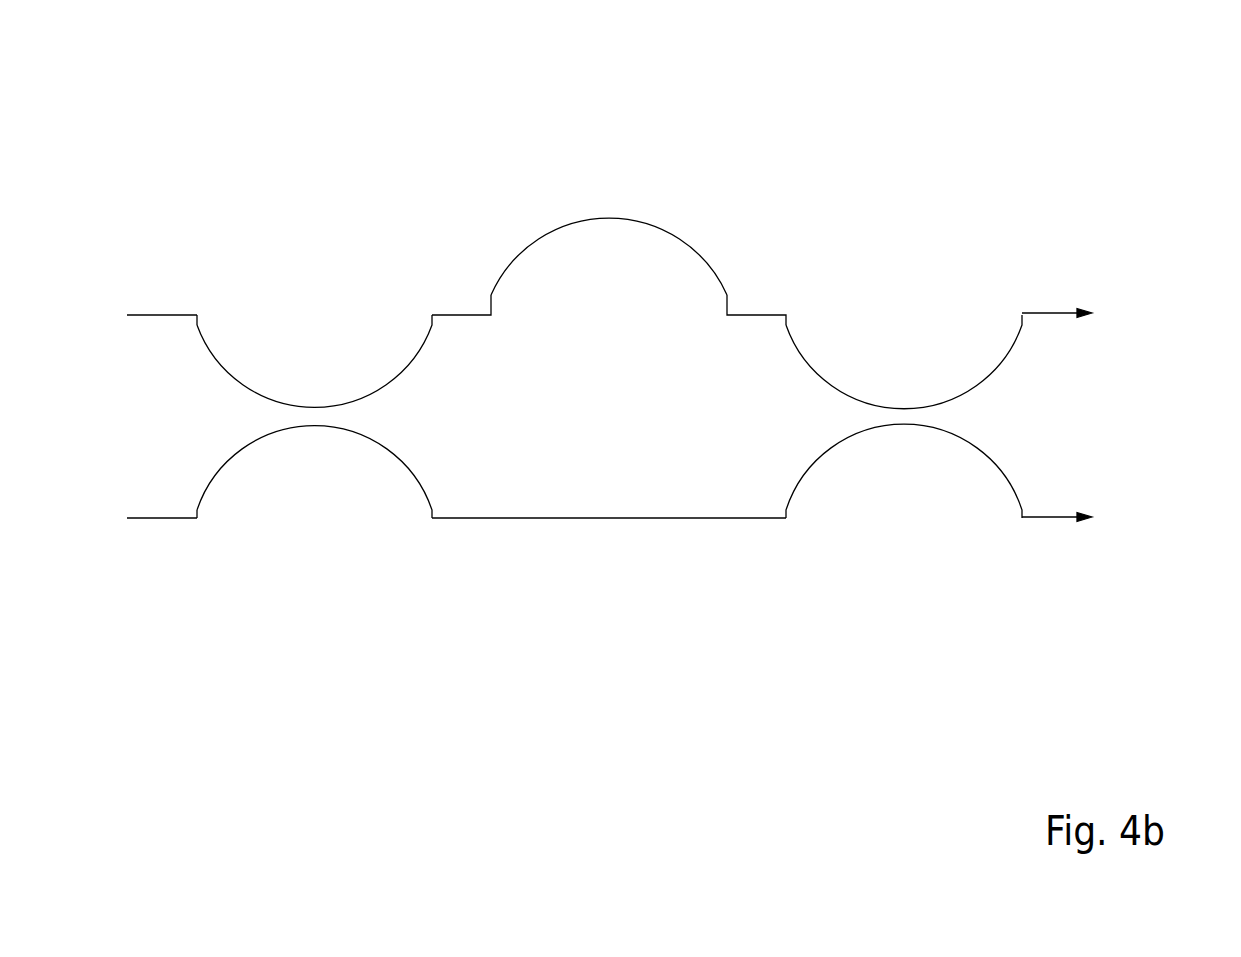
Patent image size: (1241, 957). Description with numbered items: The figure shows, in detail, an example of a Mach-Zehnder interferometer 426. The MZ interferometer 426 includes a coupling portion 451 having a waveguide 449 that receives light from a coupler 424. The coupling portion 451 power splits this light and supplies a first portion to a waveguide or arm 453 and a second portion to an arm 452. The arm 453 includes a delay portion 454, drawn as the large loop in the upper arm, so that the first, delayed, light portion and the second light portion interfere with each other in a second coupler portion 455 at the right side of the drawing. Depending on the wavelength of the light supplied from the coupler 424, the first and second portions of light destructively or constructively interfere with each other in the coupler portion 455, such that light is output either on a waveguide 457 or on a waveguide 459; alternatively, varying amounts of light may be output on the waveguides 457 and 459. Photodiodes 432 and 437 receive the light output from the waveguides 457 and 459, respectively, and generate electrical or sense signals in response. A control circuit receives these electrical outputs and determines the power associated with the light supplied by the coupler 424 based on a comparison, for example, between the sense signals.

The MZ interferometer 426 is at (962, 57).
The waveguide 449 is at (157, 315).
The coupler 424 is at (92, 340).
The coupling portion 451 is at (306, 487).
The arm 452 is at (623, 549).
The waveguide or arm 453 is at (438, 241).
The delay portion 454 is at (608, 220).
The coupler portion 455 is at (911, 487).
The waveguide 457 is at (1048, 312).
The waveguide 459 is at (1048, 517).
The photodiode 432 is at (1171, 313).
The photodiode 437 is at (1180, 515).